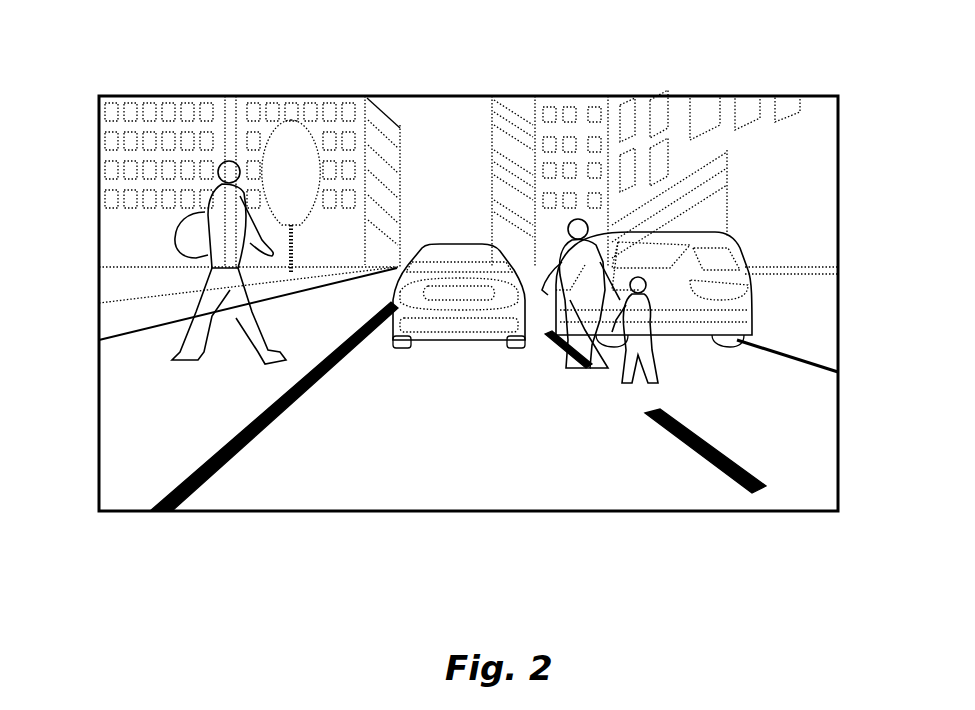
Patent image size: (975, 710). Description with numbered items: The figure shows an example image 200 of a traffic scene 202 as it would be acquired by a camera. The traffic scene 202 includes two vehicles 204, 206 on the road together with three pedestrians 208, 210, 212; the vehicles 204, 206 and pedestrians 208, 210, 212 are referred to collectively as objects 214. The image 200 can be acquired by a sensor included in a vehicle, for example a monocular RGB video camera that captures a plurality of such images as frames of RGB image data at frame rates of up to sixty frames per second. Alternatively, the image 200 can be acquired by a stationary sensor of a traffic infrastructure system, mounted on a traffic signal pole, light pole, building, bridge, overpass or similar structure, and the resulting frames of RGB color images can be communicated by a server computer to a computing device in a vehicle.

The image 200 is at (291, 95).
The traffic scene 202 is at (325, 460).
The vehicle 204 is at (468, 340).
The vehicle 206 is at (750, 285).
The pedestrian 208 is at (178, 340).
The pedestrian 210 is at (583, 370).
The pedestrian 212 is at (631, 384).
The objects 214 is at (465, 128).